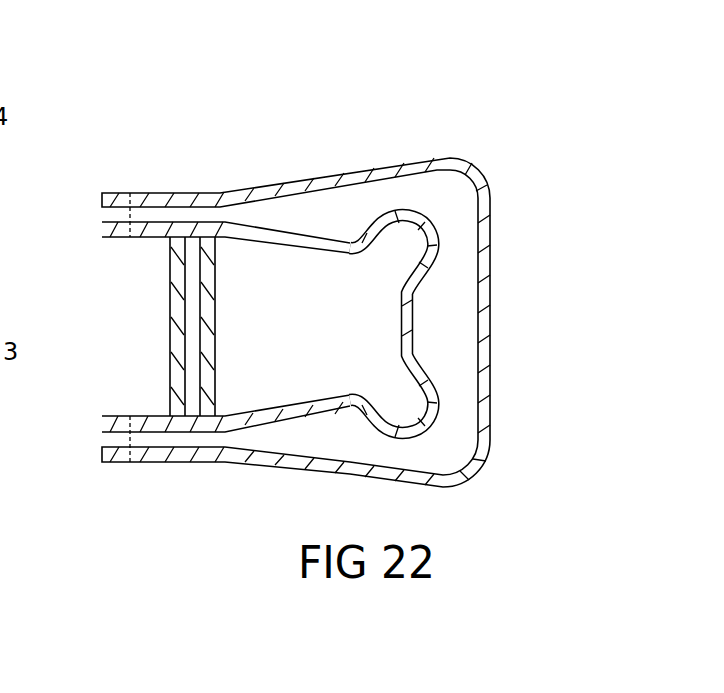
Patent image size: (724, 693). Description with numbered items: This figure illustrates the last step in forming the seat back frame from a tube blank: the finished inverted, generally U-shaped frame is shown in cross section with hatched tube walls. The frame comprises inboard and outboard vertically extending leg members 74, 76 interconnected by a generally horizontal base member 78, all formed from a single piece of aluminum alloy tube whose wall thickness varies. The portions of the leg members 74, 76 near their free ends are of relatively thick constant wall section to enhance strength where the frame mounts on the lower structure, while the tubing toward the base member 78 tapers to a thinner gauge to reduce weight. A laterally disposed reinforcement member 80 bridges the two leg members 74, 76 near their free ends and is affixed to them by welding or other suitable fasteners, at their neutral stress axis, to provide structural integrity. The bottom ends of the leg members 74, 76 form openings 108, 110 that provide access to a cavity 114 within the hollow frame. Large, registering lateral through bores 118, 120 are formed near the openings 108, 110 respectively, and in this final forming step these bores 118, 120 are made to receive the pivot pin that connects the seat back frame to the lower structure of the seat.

The inboard leg member 74 is at (303, 180).
The outboard leg member 76 is at (313, 466).
The base member 78 is at (490, 278).
The reinforcement member 80 is at (213, 308).
The opening 108 is at (100, 216).
The opening 110 is at (102, 452).
The cavity 114 is at (110, 440).
The through bore 118 is at (130, 200).
The through bore 120 is at (133, 417).